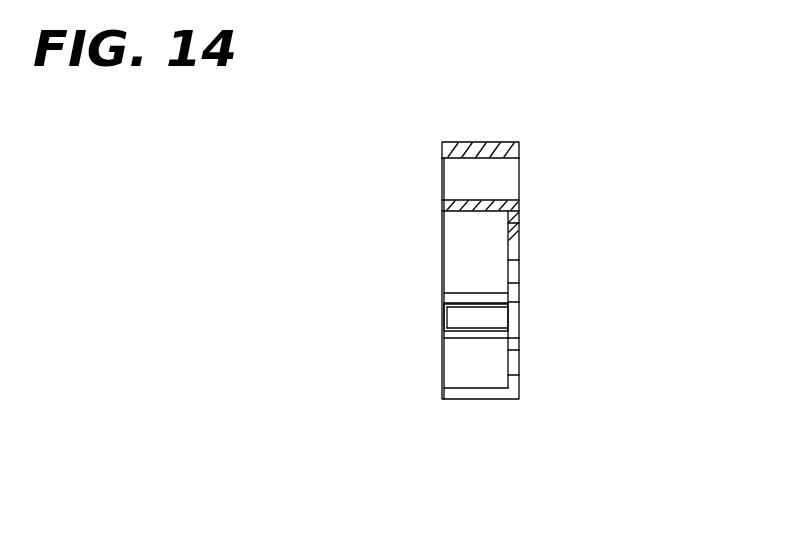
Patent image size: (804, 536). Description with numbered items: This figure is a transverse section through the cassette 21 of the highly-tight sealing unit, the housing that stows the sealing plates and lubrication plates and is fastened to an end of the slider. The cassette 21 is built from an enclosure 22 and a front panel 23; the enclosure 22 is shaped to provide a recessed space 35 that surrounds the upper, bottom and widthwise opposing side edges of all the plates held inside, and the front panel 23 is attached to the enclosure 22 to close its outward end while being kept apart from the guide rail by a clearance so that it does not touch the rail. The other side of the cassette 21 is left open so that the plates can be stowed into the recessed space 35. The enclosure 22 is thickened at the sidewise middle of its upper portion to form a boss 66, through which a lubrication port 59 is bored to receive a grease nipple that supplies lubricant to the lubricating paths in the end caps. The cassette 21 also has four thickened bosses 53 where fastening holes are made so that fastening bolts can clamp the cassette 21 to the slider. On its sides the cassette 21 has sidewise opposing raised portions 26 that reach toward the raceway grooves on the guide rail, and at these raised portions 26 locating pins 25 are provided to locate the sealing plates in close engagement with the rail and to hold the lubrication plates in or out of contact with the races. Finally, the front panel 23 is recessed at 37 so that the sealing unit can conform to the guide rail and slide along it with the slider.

The cassette 21 is at (545, 161).
The enclosure 22 is at (482, 140).
The front panel 23 is at (518, 224).
The locating pins 25 is at (467, 318).
The raised portions 26 is at (513, 318).
The recessed space 35 is at (467, 258).
The recess 37 is at (518, 235).
The thickened bosses 53 is at (468, 337).
The lubrication port 59 is at (473, 159).
The boss 66 is at (443, 215).